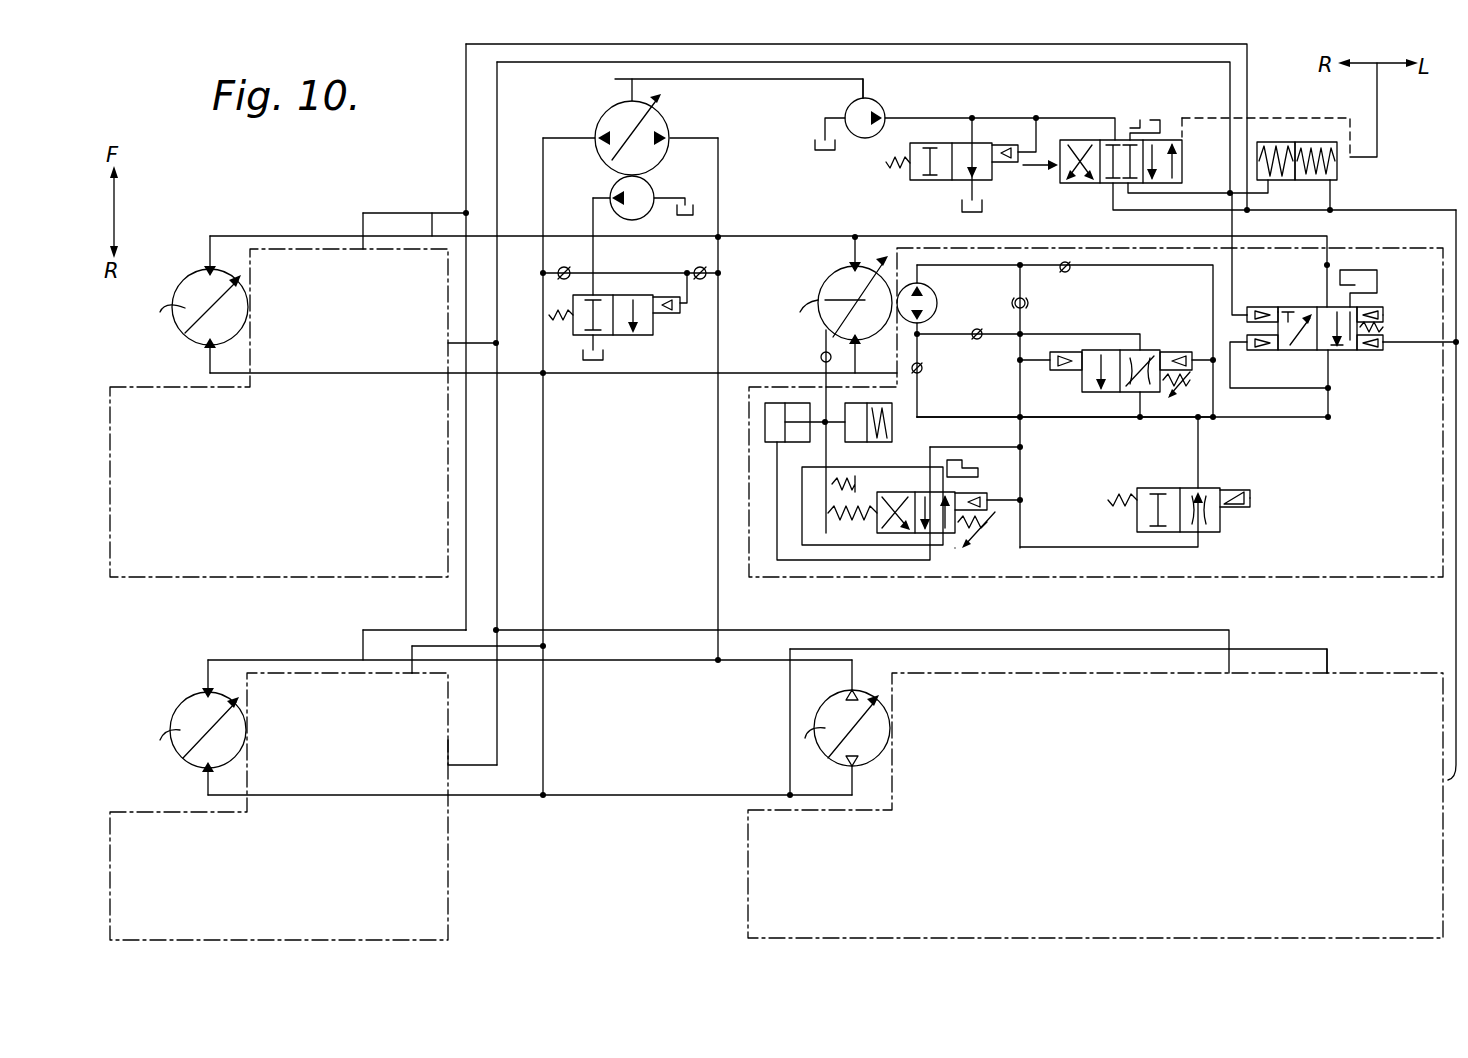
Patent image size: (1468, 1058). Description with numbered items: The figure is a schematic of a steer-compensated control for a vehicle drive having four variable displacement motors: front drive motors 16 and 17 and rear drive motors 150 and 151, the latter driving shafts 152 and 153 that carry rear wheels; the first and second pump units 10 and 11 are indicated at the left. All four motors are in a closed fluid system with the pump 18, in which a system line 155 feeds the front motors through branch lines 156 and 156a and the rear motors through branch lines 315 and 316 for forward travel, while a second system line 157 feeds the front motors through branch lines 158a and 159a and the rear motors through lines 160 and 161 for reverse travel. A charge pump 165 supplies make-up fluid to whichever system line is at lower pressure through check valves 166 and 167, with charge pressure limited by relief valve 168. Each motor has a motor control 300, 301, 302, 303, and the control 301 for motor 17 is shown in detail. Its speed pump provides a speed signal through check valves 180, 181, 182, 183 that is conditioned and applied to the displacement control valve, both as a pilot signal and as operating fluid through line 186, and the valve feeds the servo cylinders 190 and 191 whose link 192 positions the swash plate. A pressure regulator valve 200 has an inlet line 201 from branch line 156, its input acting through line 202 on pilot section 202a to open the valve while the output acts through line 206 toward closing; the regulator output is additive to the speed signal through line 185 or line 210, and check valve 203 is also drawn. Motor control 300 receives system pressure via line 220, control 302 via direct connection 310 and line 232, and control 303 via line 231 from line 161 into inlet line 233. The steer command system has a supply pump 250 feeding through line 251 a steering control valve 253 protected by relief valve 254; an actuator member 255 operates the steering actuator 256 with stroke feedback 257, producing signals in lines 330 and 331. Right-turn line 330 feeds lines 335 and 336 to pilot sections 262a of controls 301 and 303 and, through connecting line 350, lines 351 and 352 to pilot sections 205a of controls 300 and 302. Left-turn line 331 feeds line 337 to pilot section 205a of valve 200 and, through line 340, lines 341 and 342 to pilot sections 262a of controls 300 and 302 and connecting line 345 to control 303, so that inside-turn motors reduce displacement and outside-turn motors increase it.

The first pump unit 10 is at (153, 312).
The second pump unit 11 is at (804, 312).
The front drive motor 16 is at (248, 312).
The front drive motor 17 is at (828, 278).
The pump 18 is at (665, 112).
The rear drive motor 150 is at (190, 700).
The rear drive motor 151 is at (892, 742).
The shaft 152 is at (158, 739).
The shaft 153 is at (790, 742).
The system line 155 is at (716, 505).
The front motor branch line 156 is at (755, 235).
The front motor branch line 156a is at (430, 212).
The second system line 157 is at (545, 535).
The front motor branch line 158a is at (612, 378).
The front motor branch line 159a is at (342, 380).
The rear branch line 160 is at (488, 798).
The rear branch line 161 is at (665, 798).
The charge pump 165 is at (650, 185).
The check valve 166 is at (562, 266).
The check valve 167 is at (695, 268).
The pressure relief valve 168 is at (643, 335).
The check valve 180 is at (926, 362).
The check valve 181 is at (1014, 300).
The check valve 182 is at (1026, 305).
The check valve 183 is at (1070, 272).
The line 185 is at (1292, 420).
The line 186 is at (935, 448).
The servo cylinder 190 is at (763, 425).
The cylinder 191 is at (898, 415).
The link 192 is at (775, 440).
The pressure regulator valve 200 is at (1378, 356).
The inlet line 201 is at (1280, 310).
The line 202 is at (1345, 265).
The pilot section 202a is at (1392, 315).
The check valve 203 is at (1390, 330).
The pilot section 205a is at (1245, 312).
The line 206 is at (1266, 368).
The line 210 is at (1178, 268).
The line 220 is at (412, 237).
The line 231 is at (1092, 652).
The line 232 is at (410, 670).
The inlet line 233 is at (1325, 675).
The supply pump 250 is at (845, 108).
The line 251 is at (1005, 118).
The steering control valve 253 is at (1153, 130).
The relief valve 254 is at (906, 195).
The actuator member 255 is at (1048, 170).
The steering actuator 256 is at (1275, 140).
The stroke feedback 257 is at (1298, 140).
The pilot section 262a is at (1360, 360).
The motor control 300 is at (332, 587).
The motor control 301 is at (1343, 585).
The motor control 302 is at (456, 918).
The motor control 303 is at (744, 918).
The direct line connection 310 is at (443, 628).
The system branch line 315 is at (610, 662).
The system branch line 316 is at (745, 662).
The steer command signal line 330 is at (1113, 210).
The steer command signal line 331 is at (1195, 188).
The line 335 is at (1425, 362).
The line 336 is at (1450, 778).
The line 337 is at (1238, 223).
The line 340 is at (970, 70).
The line 341 is at (446, 344).
The line 342 is at (460, 755).
The connecting line 345 is at (1150, 628).
The connecting line 350 is at (598, 50).
The line 351 is at (372, 210).
The line 352 is at (370, 624).